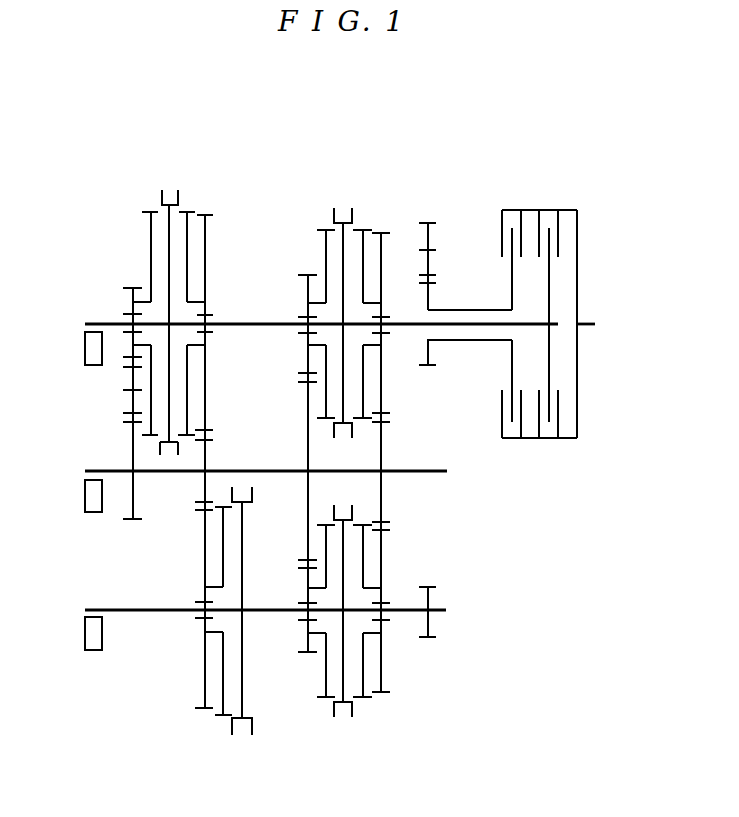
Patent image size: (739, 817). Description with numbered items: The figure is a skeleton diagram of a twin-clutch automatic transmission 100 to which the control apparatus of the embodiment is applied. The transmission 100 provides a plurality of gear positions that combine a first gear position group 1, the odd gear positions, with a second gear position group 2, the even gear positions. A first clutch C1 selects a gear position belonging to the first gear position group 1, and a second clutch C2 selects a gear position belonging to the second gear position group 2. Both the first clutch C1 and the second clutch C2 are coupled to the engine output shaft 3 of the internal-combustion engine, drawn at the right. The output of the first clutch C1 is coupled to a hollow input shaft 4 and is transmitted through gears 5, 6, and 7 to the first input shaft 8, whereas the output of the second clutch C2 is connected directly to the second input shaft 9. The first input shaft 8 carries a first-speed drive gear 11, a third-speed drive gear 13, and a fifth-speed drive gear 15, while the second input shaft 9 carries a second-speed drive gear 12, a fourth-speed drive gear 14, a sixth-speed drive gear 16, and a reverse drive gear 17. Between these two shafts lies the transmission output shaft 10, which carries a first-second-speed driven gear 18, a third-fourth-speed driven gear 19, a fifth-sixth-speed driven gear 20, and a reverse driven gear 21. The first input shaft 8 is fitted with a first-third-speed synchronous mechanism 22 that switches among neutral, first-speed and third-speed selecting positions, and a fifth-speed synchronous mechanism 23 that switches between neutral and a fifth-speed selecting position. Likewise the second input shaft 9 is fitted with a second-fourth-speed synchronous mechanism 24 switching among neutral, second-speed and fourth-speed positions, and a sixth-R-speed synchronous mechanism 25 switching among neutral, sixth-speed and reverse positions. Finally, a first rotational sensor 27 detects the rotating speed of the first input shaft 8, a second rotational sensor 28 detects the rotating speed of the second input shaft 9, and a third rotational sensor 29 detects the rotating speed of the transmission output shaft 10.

The first gear position group 1 is at (423, 688).
The second gear position group 2 is at (387, 178).
The engine output shaft 3 is at (585, 323).
The hollow input shaft 4 is at (465, 342).
The gear 5 is at (437, 295).
The gear 6 is at (432, 223).
The gear 7 is at (432, 587).
The first input shaft 8 is at (130, 608).
The second input shaft 9 is at (113, 322).
The transmission output shaft 10 is at (112, 468).
The first-speed drive gear 11 is at (303, 653).
The second-speed drive gear 12 is at (307, 273).
The third-speed drive gear 13 is at (380, 695).
The fourth-speed drive gear 14 is at (383, 233).
The fifth-speed drive gear 15 is at (198, 710).
The sixth-speed drive gear 16 is at (208, 213).
The reverse drive gear 17 is at (132, 287).
The first-second-speed driven gear 18 is at (307, 405).
The third-fourth-speed driven gear 19 is at (382, 442).
The fifth-sixth-speed driven gear 20 is at (207, 453).
The reverse driven gear 21 is at (133, 500).
The first-third-speed synchronous mechanism 22 is at (352, 710).
The fifth-speed synchronous mechanism 23 is at (250, 728).
The second-fourth-speed synchronous mechanism 24 is at (352, 215).
The sixth-R-speed synchronous mechanism 25 is at (178, 198).
The first rotational sensor 27 is at (85, 633).
The second rotational sensor 28 is at (85, 347).
The third rotational sensor 29 is at (85, 493).
The twin-clutch automatic transmission 100 is at (513, 152).
The first clutch C1 is at (522, 233).
The second clutch C2 is at (558, 235).